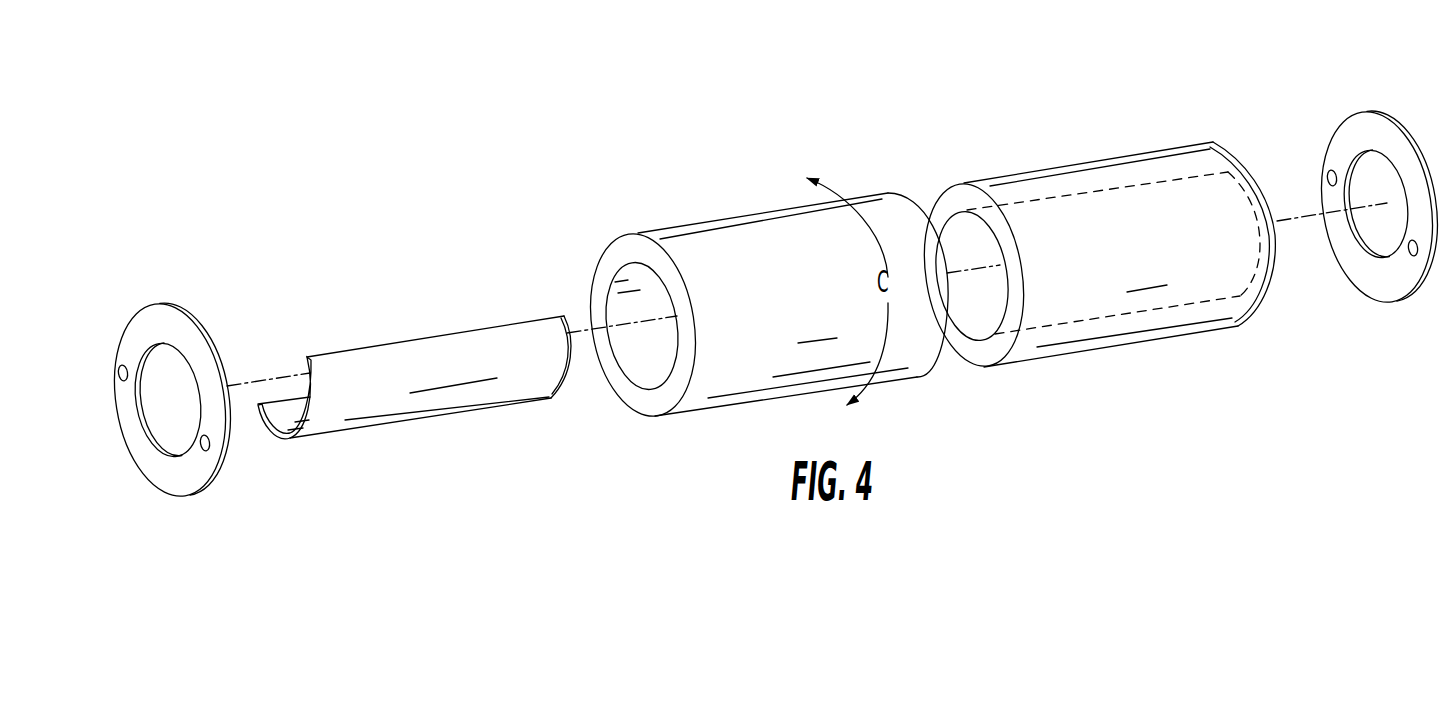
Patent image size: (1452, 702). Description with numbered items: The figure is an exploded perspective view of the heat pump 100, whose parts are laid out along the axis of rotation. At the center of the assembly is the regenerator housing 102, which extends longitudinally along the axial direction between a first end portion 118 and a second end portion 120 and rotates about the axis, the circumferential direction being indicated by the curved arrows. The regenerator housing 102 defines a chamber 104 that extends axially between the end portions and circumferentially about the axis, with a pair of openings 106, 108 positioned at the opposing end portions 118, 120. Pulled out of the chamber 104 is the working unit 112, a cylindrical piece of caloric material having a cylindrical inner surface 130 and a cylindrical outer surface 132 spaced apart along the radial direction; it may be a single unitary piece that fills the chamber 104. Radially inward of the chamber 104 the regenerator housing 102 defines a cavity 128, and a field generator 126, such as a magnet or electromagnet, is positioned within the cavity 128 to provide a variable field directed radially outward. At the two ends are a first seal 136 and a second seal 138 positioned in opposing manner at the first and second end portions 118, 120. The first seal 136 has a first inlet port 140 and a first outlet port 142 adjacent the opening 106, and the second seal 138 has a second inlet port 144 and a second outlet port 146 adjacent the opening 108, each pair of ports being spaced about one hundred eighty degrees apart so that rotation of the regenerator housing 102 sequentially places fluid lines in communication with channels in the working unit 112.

The heat pump 100 is at (421, 135).
The regenerator housing 102 is at (1101, 261).
The chamber 104 is at (1113, 294).
The opening 106 is at (1045, 154).
The opening 108 is at (1266, 263).
The working unit 112 is at (756, 304).
The first end portion 118 is at (974, 226).
The second end portion 120 is at (1198, 358).
The field generator 126 is at (413, 419).
The cavity 128 is at (971, 325).
The cylindrical inner surface 130 is at (626, 368).
The cylindrical outer surface 132 is at (647, 283).
The first seal 136 is at (162, 403).
The second seal 138 is at (1369, 210).
The first inlet port 140 is at (201, 492).
The first outlet port 142 is at (105, 326).
The second inlet port 144 is at (1313, 129).
The second outlet port 146 is at (1411, 298).